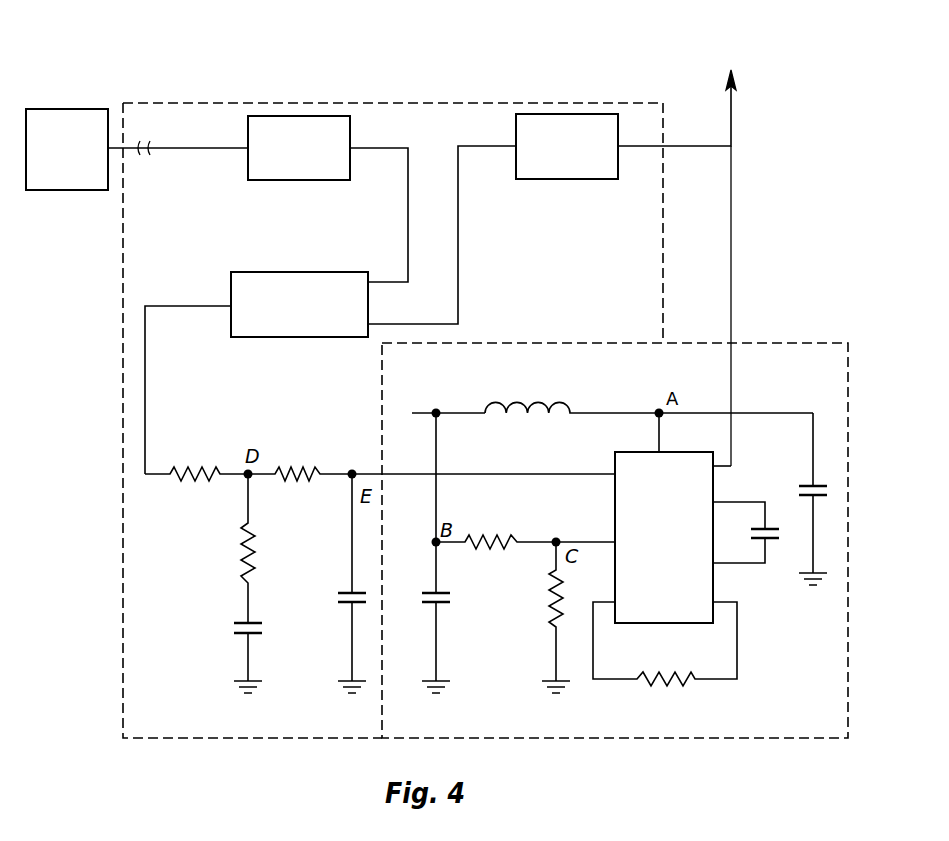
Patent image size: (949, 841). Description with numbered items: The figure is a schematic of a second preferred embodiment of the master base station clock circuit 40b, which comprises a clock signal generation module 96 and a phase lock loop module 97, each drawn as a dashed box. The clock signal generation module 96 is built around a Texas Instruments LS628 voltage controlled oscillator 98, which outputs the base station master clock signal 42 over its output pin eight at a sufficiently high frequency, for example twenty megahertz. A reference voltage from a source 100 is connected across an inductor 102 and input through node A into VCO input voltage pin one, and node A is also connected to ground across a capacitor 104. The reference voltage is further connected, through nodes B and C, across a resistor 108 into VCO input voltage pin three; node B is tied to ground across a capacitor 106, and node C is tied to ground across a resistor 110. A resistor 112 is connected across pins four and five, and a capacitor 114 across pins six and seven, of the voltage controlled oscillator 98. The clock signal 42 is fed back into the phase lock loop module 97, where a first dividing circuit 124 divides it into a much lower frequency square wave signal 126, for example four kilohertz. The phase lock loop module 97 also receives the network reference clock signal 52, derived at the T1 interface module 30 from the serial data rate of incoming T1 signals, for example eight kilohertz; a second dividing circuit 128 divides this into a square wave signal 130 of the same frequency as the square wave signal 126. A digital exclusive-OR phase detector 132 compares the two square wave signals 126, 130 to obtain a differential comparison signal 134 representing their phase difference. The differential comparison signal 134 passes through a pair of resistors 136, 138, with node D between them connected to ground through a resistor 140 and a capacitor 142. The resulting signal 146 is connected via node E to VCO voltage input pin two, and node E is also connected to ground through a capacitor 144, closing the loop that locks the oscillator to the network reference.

The T1 interface module 30 is at (63, 108).
The network reference clock signal 52 is at (227, 146).
The second dividing circuit 128 is at (316, 116).
The square wave signal 130 is at (408, 161).
The phase lock loop module 97 is at (540, 103).
The master base station clock circuit 40b is at (704, 52).
The base station master clock signal 42 is at (731, 124).
The first dividing circuit 124 is at (545, 180).
The square wave signal 126 is at (458, 283).
The phase detector 132 is at (293, 272).
The differential comparison signal 134 is at (145, 366).
The resistor 136 is at (197, 467).
The resistor 138 is at (296, 467).
The resistor 140 is at (243, 545).
The capacitor 142 is at (236, 626).
The capacitor 144 is at (336, 596).
The resulting signal 146 is at (330, 476).
The clock signal generation module 96 is at (792, 343).
The reference voltage source 100 is at (430, 411).
The inductor 102 is at (518, 404).
The voltage controlled oscillator 98 is at (622, 450).
The capacitor 104 is at (798, 489).
The resistor 108 is at (525, 518).
The capacitor 106 is at (452, 597).
The resistor 110 is at (551, 623).
The resistor 112 is at (642, 682).
The capacitor 114 is at (782, 535).